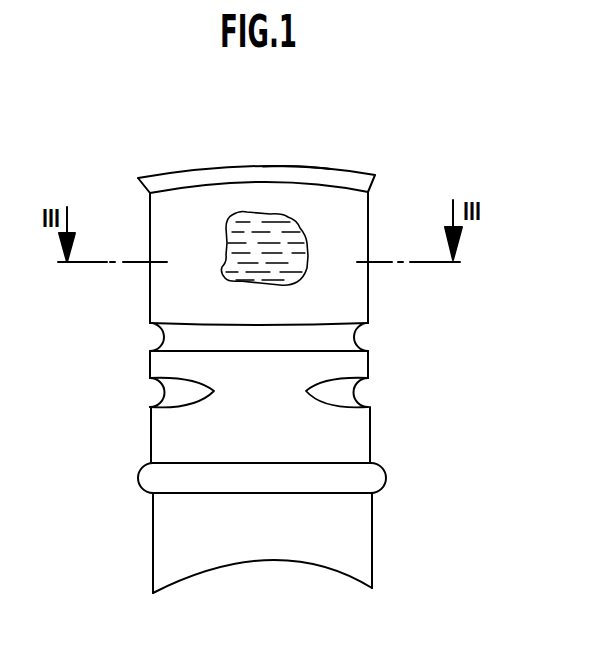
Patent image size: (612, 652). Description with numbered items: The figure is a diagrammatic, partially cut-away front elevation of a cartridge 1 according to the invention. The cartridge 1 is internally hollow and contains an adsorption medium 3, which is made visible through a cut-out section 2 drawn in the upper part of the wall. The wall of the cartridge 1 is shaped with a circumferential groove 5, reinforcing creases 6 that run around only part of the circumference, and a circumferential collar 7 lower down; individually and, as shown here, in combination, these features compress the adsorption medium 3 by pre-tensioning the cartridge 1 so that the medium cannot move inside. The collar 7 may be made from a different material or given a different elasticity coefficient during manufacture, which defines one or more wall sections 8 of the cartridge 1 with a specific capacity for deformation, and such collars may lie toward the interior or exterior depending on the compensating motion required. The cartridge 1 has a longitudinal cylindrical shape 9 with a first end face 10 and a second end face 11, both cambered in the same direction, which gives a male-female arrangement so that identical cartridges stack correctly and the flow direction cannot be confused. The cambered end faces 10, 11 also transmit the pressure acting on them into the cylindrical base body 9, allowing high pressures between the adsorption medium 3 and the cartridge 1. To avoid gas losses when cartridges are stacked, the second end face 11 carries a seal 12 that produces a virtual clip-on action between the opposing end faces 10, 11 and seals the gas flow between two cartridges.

The cartridge 1 is at (492, 356).
The cut-out section 2 is at (232, 220).
The adsorption medium 3 is at (277, 225).
The circumferential groove 5 is at (331, 331).
The reinforcing creases 6 is at (361, 388).
The circumferential collar 7 is at (367, 477).
The wall section 8 is at (119, 485).
The longitudinal cylindrical shape 9 is at (372, 543).
The first end face 10 is at (288, 582).
The second end face 11 is at (319, 142).
The seal 12 is at (340, 181).